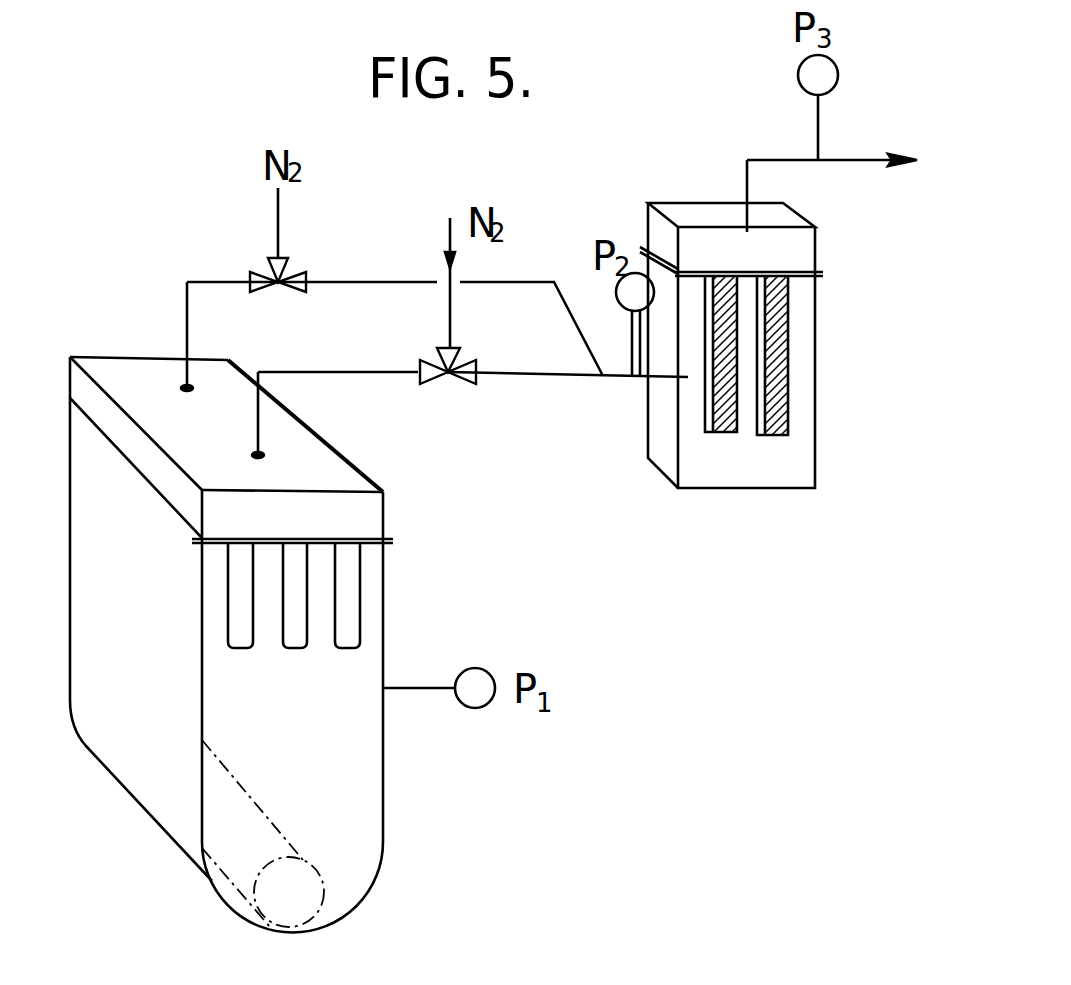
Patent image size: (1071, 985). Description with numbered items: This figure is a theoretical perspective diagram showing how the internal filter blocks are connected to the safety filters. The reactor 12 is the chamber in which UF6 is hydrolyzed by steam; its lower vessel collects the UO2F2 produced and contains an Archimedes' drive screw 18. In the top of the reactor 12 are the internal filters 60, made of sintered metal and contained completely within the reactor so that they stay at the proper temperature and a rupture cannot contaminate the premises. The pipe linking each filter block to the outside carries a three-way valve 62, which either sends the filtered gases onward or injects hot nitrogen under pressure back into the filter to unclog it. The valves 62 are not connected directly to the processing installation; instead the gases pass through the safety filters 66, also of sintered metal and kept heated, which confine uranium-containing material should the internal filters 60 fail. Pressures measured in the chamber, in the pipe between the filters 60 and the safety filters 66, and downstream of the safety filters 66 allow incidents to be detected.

The reactor 12 is at (382, 783).
The Archimedes' drive screw 18 is at (324, 878).
The internal filters 60 is at (300, 613).
The three-way valve 62 is at (278, 282).
The safety filters 66 is at (815, 420).